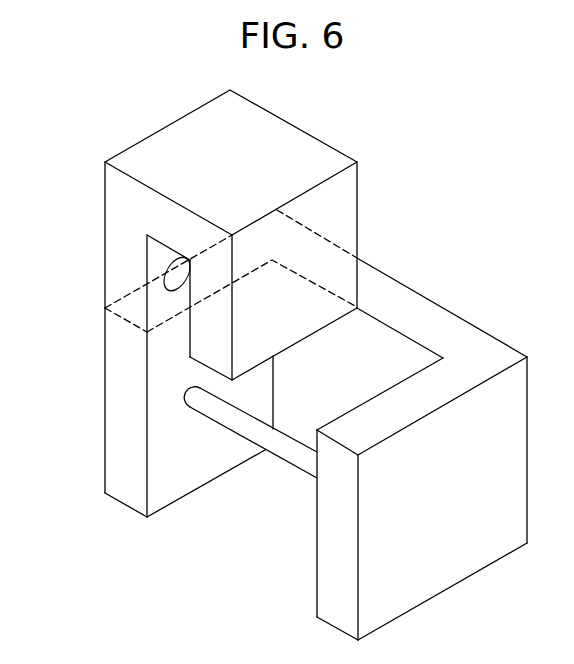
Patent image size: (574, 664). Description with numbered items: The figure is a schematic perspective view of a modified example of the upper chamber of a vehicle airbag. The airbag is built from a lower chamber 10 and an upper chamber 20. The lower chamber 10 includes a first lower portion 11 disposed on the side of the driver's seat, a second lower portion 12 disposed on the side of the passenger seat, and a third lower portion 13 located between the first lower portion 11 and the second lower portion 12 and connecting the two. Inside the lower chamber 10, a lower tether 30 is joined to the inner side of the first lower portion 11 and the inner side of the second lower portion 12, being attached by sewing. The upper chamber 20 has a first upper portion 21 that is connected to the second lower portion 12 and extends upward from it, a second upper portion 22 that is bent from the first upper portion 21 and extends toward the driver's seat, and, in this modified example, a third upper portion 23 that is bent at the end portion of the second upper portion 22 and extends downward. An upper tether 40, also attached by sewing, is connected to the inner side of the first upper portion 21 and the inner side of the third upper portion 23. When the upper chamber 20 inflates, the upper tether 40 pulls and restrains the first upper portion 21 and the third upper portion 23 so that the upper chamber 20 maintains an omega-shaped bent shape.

The lower chamber 10 is at (294, 444).
The first lower portion 11 is at (457, 552).
The second lower portion 12 is at (170, 375).
The third lower portion 13 is at (400, 308).
The upper chamber 20 is at (219, 226).
The first upper portion 21 is at (128, 262).
The second upper portion 22 is at (248, 130).
The third upper portion 23 is at (335, 208).
The lower tether 30 is at (295, 452).
The upper tether 40 is at (182, 277).